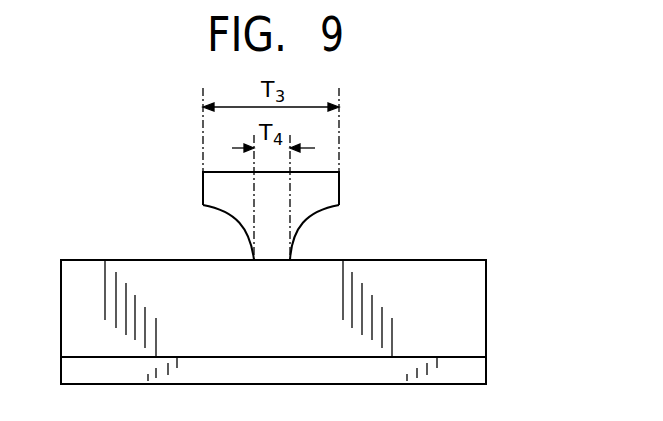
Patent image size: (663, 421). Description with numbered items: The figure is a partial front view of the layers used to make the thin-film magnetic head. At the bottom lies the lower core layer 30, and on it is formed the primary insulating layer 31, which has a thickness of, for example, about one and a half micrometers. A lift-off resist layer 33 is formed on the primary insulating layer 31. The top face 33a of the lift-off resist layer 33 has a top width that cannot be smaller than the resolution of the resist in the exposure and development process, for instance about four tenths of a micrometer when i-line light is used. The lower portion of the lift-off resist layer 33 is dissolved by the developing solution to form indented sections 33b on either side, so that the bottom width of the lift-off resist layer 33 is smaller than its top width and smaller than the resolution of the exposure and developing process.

The lower core layer 30 is at (462, 365).
The primary insulating layer 31 is at (462, 297).
The lift-off resist layer 33 is at (255, 205).
The top face 33a is at (323, 186).
The indented sections 33b is at (230, 240).